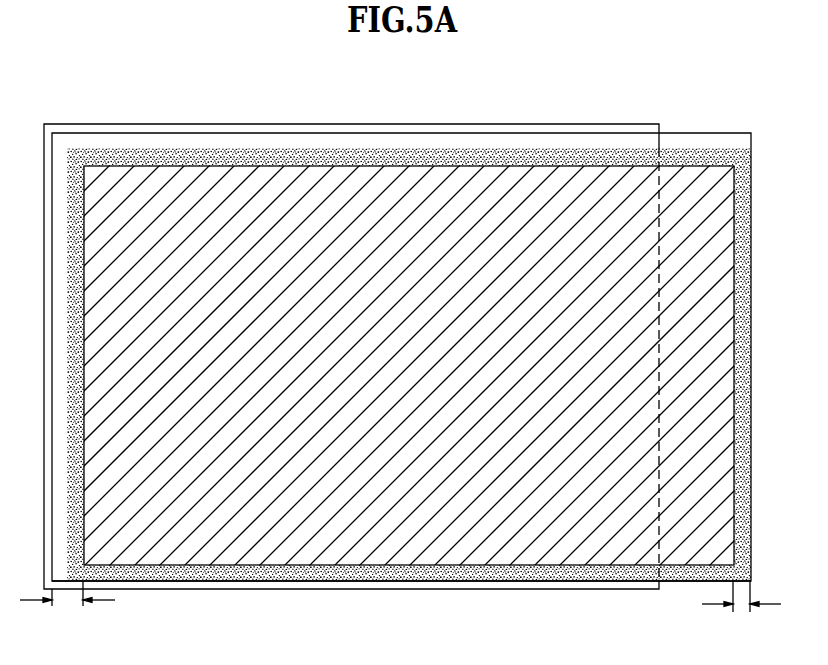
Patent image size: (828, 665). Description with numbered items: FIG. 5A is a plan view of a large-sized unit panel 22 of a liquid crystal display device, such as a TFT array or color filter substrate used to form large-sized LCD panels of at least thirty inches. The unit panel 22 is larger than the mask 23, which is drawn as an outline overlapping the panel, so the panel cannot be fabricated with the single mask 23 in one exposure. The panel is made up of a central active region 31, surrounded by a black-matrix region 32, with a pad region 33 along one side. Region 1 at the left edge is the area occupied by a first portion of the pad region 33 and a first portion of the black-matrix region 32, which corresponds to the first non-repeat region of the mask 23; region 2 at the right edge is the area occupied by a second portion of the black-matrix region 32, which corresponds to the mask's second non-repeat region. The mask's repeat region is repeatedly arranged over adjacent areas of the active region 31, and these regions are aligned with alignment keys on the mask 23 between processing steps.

The large-sized unit panel 22 is at (412, 582).
The mask 23 is at (433, 127).
The active region 31 is at (303, 180).
The black-matrix region 32 is at (591, 158).
The pad region 33 is at (706, 142).
The region ① 1 is at (67, 610).
The region ② 2 is at (741, 613).